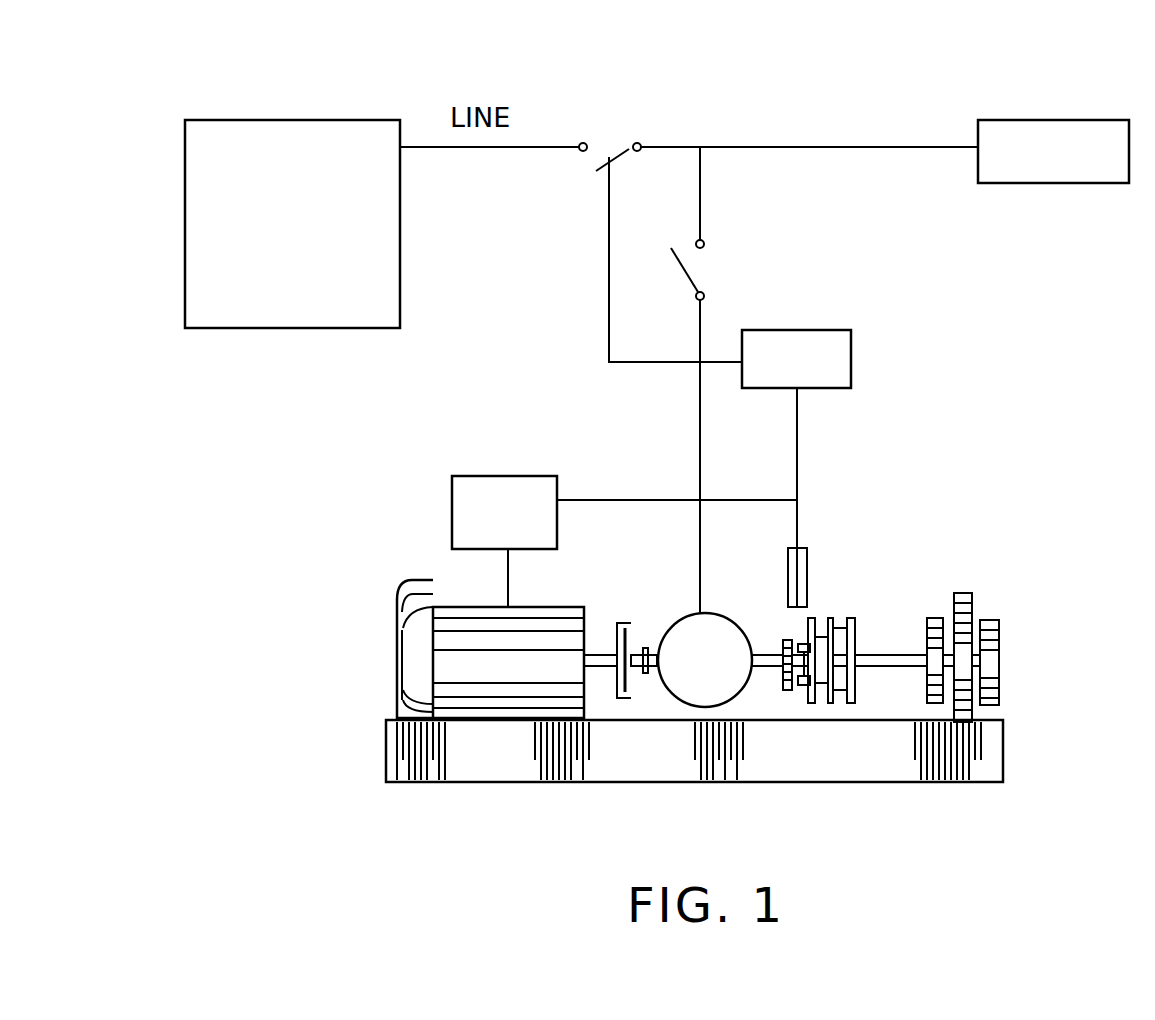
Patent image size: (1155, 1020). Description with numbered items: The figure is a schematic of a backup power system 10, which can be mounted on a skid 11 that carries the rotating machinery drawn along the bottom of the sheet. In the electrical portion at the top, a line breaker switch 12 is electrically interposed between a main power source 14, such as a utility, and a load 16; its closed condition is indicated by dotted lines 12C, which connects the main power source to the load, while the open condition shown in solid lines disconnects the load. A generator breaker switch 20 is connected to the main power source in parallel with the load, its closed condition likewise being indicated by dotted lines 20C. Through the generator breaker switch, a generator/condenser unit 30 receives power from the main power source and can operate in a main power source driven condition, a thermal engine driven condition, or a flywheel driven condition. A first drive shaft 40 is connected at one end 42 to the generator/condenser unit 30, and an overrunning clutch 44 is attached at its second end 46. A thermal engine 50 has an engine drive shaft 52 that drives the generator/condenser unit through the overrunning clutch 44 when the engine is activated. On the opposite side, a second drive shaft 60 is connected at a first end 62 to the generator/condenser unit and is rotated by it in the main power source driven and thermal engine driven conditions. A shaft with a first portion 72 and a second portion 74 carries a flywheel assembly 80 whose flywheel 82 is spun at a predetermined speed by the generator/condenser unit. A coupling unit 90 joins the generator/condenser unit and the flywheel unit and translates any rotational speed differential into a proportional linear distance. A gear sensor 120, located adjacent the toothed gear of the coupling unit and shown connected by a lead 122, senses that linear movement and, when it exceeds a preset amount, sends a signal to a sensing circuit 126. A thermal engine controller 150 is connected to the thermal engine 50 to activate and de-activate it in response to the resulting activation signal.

The backup power system 10 is at (366, 405).
The skid 11 is at (993, 738).
The line breaker switch 12 is at (639, 107).
The dotted lines 12C is at (608, 148).
The main power source 14 is at (262, 128).
The load 16 is at (1087, 130).
The generator breaker switch 20 is at (773, 263).
The dotted lines 20C is at (703, 270).
The generator/condenser unit 30 is at (707, 630).
The first drive shaft 40 is at (655, 632).
The one end 42 is at (643, 672).
The overrunning clutch 44 is at (624, 612).
The second end 46 is at (641, 652).
The thermal engine 50 is at (472, 615).
The engine drive shaft 52 is at (607, 655).
The second drive shaft 60 is at (773, 663).
The first end 62 is at (757, 657).
The first portion 72 is at (912, 655).
The second portion 74 is at (858, 650).
The flywheel assembly 80 is at (982, 597).
The flywheel 82 is at (962, 622).
The coupling unit 90 is at (834, 722).
The gear sensor 120 is at (803, 580).
The sensor lead 122 is at (800, 560).
The sensing circuit 126 is at (808, 345).
The thermal engine controller 150 is at (540, 488).